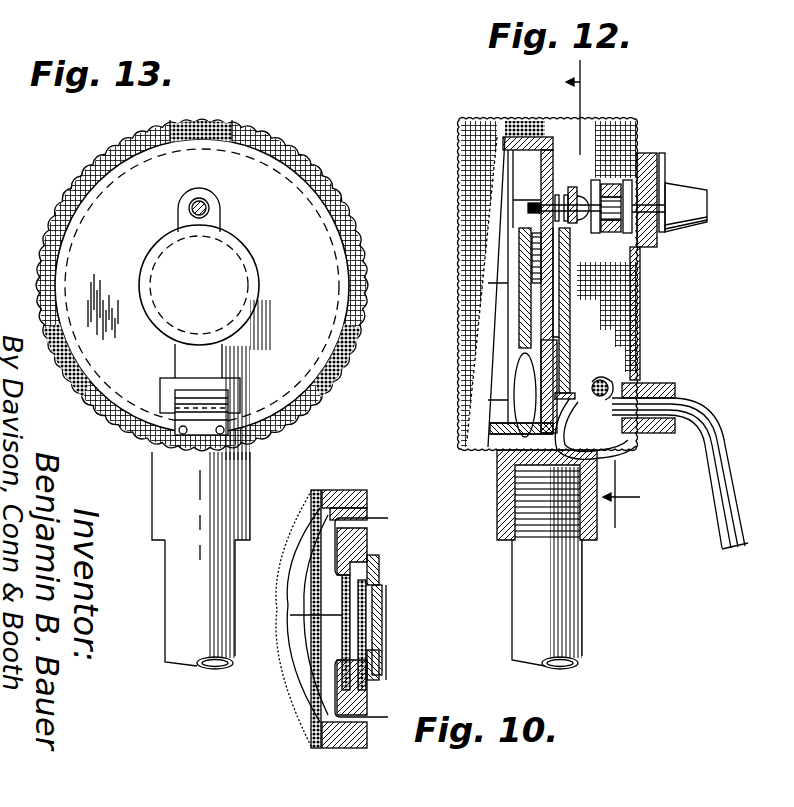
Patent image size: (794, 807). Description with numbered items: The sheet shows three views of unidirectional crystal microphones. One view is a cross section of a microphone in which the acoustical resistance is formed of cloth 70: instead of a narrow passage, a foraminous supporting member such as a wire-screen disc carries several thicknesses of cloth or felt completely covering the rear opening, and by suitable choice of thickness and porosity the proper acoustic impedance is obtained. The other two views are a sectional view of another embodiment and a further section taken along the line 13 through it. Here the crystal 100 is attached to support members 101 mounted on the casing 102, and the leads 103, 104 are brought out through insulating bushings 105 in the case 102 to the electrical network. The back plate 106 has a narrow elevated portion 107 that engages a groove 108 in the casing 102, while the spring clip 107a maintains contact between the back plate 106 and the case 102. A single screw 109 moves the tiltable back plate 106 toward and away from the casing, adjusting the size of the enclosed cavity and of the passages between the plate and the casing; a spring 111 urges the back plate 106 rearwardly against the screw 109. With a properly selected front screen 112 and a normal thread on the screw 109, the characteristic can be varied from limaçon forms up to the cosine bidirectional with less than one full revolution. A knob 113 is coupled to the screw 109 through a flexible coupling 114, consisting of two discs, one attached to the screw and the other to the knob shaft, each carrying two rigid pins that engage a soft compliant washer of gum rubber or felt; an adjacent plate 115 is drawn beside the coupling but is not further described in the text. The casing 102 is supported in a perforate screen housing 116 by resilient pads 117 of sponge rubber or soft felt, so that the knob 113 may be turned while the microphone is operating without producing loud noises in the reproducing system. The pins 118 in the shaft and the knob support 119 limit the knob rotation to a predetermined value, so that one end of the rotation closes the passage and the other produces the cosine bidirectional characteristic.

In FIG. 10, the cloth 70 is at (378, 625).
In FIG. 12, the crystal 100 is at (508, 299).
In FIG. 12, the support members 101 is at (512, 228).
In FIG. 13, the casing 102 is at (202, 286).
In FIG. 12, the casing 102 is at (555, 150).
In FIG. 12, the lead 103 is at (590, 432).
In FIG. 12, the lead 104 is at (612, 462).
In FIG. 12, the insulating bushings 105 is at (512, 458).
In FIG. 13, the back plate 106 is at (226, 279).
In FIG. 12, the back plate 106 is at (575, 272).
In FIG. 13, the narrow elevated portion 107 is at (212, 395).
In FIG. 12, the narrow elevated portion 107 is at (470, 448).
In FIG. 12, the spring clip 107a is at (610, 408).
In FIG. 12, the groove 108 is at (540, 404).
In FIG. 13, the screw 109 is at (210, 205).
In FIG. 12, the screw 109 is at (582, 190).
In FIG. 12, the spring 111 is at (565, 188).
In FIG. 12, the front screen 112 is at (482, 178).
In FIG. 12, the knob 113 is at (690, 198).
In FIG. 12, the flexible coupling 114 is at (668, 173).
In FIG. 12, the plate 115 is at (660, 160).
In FIG. 13, the perforate screen housing 116 is at (308, 162).
In FIG. 12, the perforate screen housing 116 is at (482, 118).
In FIG. 13, the resilient pads 117 is at (215, 122).
In FIG. 12, the resilient pads 117 is at (532, 126).
In FIG. 12, the pins 118 is at (760, 300).
In FIG. 12, the knob support 119 is at (680, 182).
In FIG. 12, the section line 13 is at (605, 294).